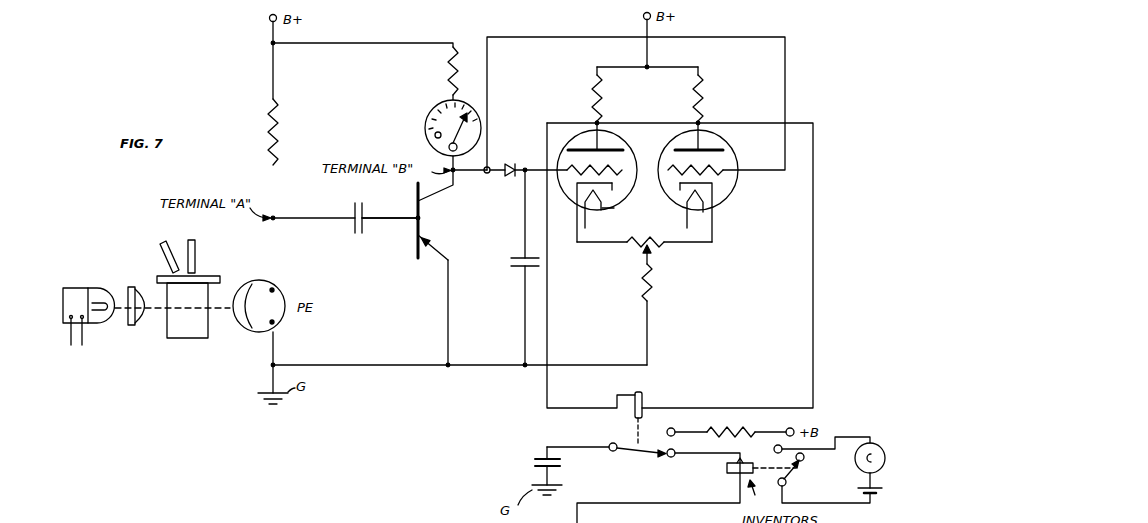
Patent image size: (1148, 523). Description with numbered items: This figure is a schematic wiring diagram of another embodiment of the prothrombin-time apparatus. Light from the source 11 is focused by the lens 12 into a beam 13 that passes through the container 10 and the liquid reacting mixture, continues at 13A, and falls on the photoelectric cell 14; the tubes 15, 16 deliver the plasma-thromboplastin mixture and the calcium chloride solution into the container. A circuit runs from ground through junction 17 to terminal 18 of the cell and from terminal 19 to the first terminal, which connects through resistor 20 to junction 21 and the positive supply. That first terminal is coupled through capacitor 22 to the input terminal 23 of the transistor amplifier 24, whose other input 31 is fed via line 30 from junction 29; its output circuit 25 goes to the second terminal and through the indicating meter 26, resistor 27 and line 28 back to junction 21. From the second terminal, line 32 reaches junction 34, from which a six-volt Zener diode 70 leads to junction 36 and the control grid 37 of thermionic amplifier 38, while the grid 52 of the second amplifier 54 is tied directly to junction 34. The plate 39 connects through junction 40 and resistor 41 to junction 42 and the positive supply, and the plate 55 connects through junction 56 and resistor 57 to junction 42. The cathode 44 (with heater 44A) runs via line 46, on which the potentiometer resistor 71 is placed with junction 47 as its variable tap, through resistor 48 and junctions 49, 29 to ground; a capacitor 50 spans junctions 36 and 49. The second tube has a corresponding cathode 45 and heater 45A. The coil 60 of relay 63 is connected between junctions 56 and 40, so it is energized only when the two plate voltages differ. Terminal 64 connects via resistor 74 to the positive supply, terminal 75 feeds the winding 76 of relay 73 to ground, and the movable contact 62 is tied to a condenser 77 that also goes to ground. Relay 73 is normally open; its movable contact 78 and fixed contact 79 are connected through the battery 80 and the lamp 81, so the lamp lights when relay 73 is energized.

The container 10 is at (190, 333).
The light source 11 is at (88, 290).
The lens 12 is at (142, 290).
The beam 13 is at (160, 312).
The continuing beam 13A is at (228, 320).
The photoelectric cell 14 is at (258, 291).
The tube 15 is at (196, 265).
The tube 16 is at (170, 238).
The junction 17 is at (275, 364).
The terminal 18 is at (274, 323).
The terminal 19 is at (274, 289).
The resistor 20 is at (279, 135).
The junction 21 is at (276, 48).
The capacitor 22 is at (368, 213).
The input terminal 23 is at (416, 262).
The transistor amplifier 24 is at (428, 228).
The output circuit 25 is at (437, 195).
The indicating meter 26 is at (423, 118).
The resistor 27 is at (448, 70).
The line 28 is at (396, 45).
The junction 29 is at (451, 363).
The line 30 is at (450, 300).
The input 31 is at (437, 243).
The line 32 is at (472, 178).
The junction 34 is at (490, 165).
The junction 36 is at (527, 180).
The control grid 37 is at (622, 160).
The thermionic amplifier 38 is at (603, 161).
The plate 39 is at (628, 140).
The junction 40 is at (599, 120).
The resistor 41 is at (601, 92).
The junction 42 is at (647, 72).
The cathode 44 is at (614, 198).
The heater 44A is at (608, 211).
The cathode 45 is at (710, 205).
The heater 45A is at (706, 212).
The line 46 is at (593, 245).
The junction 47 is at (644, 258).
The resistor 48 is at (651, 285).
The junction 49 is at (524, 368).
The capacitor 50 is at (520, 272).
The grid 52 is at (714, 185).
The second thermionic amplifier 54 is at (740, 143).
The plate 55 is at (718, 145).
The junction 56 is at (700, 120).
The resistor 57 is at (702, 90).
The coil 60 is at (645, 400).
The movable contact 62 is at (637, 452).
The relay 63 is at (672, 408).
The terminal 64 is at (673, 428).
The Zener diode 70 is at (518, 165).
The potentiometer resistor 71 is at (657, 247).
The relay 73 is at (756, 494).
The resistor 74 is at (745, 428).
The terminal 75 is at (670, 458).
The winding 76 is at (735, 473).
The condenser 77 is at (538, 460).
The movable contact 78 is at (790, 475).
The fixed contact 79 is at (774, 449).
The battery 80 is at (860, 486).
The lamp 81 is at (880, 445).